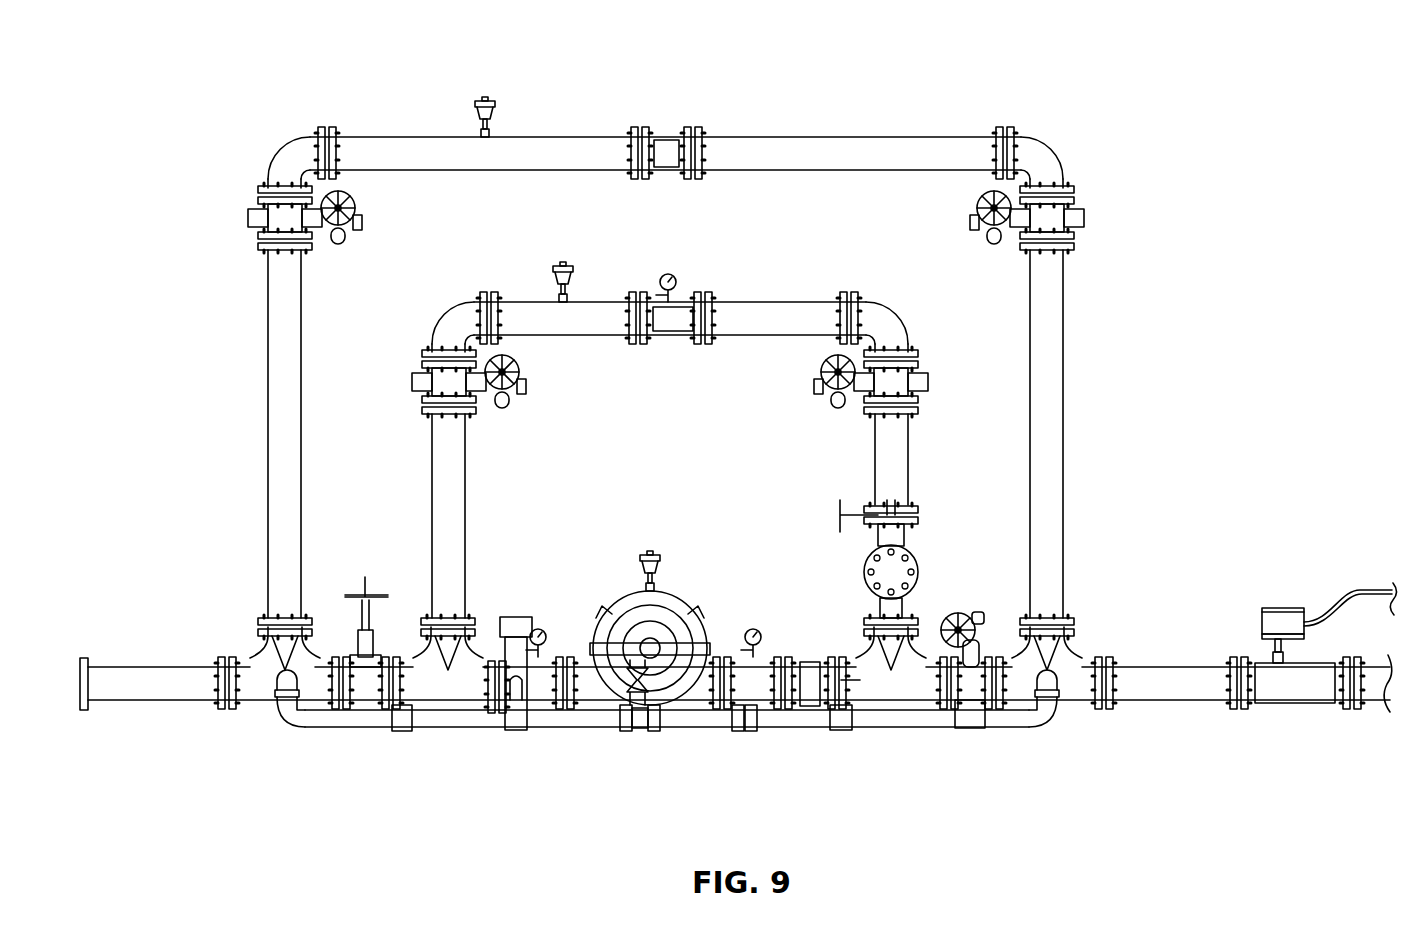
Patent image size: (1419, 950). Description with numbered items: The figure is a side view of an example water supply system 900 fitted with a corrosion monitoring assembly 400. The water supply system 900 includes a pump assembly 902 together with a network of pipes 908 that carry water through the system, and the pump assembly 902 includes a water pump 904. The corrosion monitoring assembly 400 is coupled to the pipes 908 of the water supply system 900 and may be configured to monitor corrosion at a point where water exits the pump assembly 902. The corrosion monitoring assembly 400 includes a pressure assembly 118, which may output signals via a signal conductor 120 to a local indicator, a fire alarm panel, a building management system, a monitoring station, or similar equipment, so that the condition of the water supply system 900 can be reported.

The water supply system 900 is at (738, 423).
The pipes 908 is at (282, 147).
The water pump 904 is at (705, 604).
The pump assembly 902 is at (632, 740).
The corrosion monitoring assembly 400 is at (1297, 707).
The pressure assembly 118 is at (1262, 618).
The signal conductor 120 is at (1353, 588).